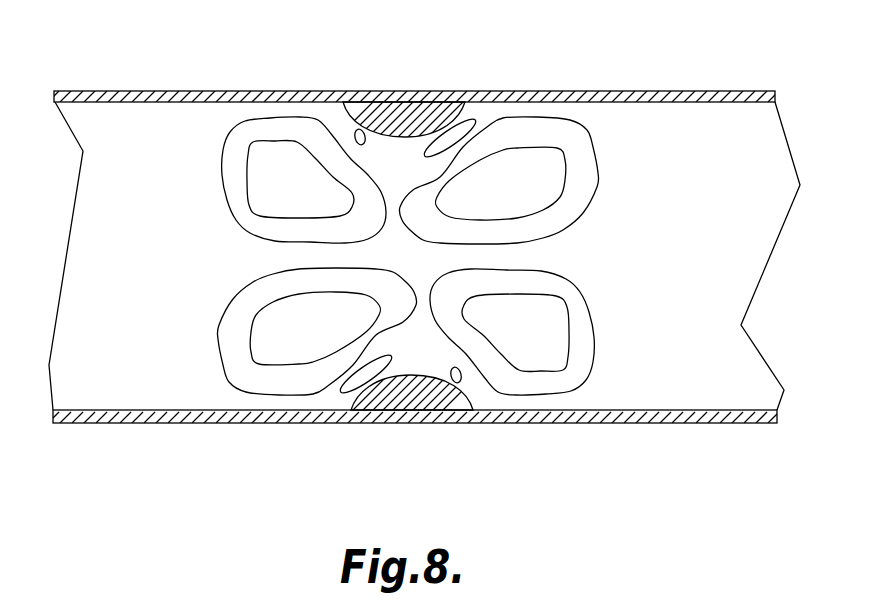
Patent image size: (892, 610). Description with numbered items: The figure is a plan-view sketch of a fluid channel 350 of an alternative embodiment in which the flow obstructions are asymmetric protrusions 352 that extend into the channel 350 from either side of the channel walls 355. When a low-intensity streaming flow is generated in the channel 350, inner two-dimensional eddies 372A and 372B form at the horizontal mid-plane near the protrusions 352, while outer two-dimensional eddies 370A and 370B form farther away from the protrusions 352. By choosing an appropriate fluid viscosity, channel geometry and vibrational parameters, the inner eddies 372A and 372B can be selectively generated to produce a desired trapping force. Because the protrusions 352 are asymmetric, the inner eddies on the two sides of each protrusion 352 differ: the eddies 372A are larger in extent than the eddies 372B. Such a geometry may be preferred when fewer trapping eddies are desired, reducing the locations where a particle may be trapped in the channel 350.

The fluid channel 350 is at (678, 123).
The channel walls 355 is at (152, 91).
The asymmetric protrusions 352 is at (399, 110).
The outer 2-D eddies 370A is at (577, 118).
The outer 2-D eddies 370B is at (270, 118).
The inner 2-D eddies 372A is at (477, 121).
The inner 2-D eddies 372B is at (357, 129).